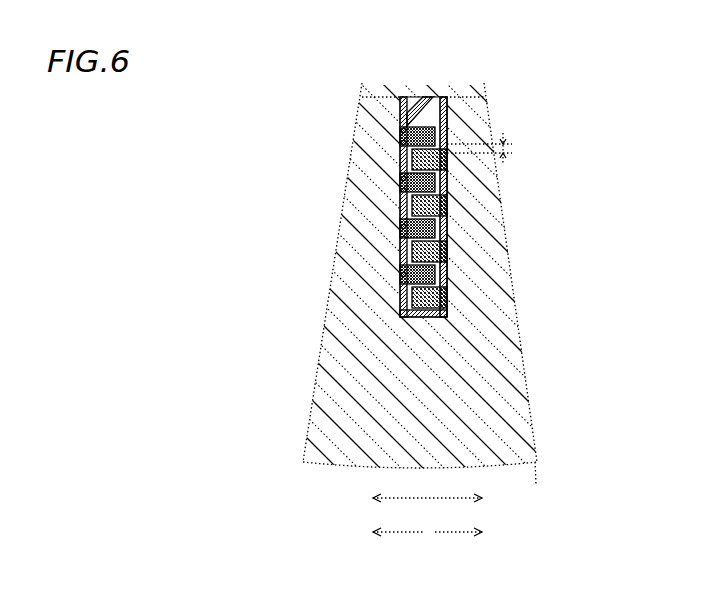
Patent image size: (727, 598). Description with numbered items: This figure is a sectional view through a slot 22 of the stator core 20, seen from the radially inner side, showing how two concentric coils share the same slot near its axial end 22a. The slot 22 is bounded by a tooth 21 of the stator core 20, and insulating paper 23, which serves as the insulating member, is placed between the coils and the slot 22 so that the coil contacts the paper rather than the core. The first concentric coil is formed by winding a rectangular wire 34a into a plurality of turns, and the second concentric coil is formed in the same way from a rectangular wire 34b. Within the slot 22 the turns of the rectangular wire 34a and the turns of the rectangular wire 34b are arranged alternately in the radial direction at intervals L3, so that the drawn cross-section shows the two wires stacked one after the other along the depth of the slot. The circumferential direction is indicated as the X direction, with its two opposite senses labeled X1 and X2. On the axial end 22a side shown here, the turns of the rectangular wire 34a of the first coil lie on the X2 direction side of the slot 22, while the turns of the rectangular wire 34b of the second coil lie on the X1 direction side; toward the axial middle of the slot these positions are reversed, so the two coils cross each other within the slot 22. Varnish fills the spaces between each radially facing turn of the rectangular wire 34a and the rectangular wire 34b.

The stator core 20 is at (515, 367).
The tooth 21 is at (381, 97).
The slot 22 is at (462, 175).
The axial end of the slot 22a is at (433, 97).
The insulating paper 23 is at (403, 97).
The rectangular wire 34a is at (447, 295).
The rectangular wire 34b is at (405, 275).
The interval L3 is at (500, 149).
The X direction X is at (427, 509).
The X1 direction X1 is at (399, 543).
The X2 direction X2 is at (458, 543).